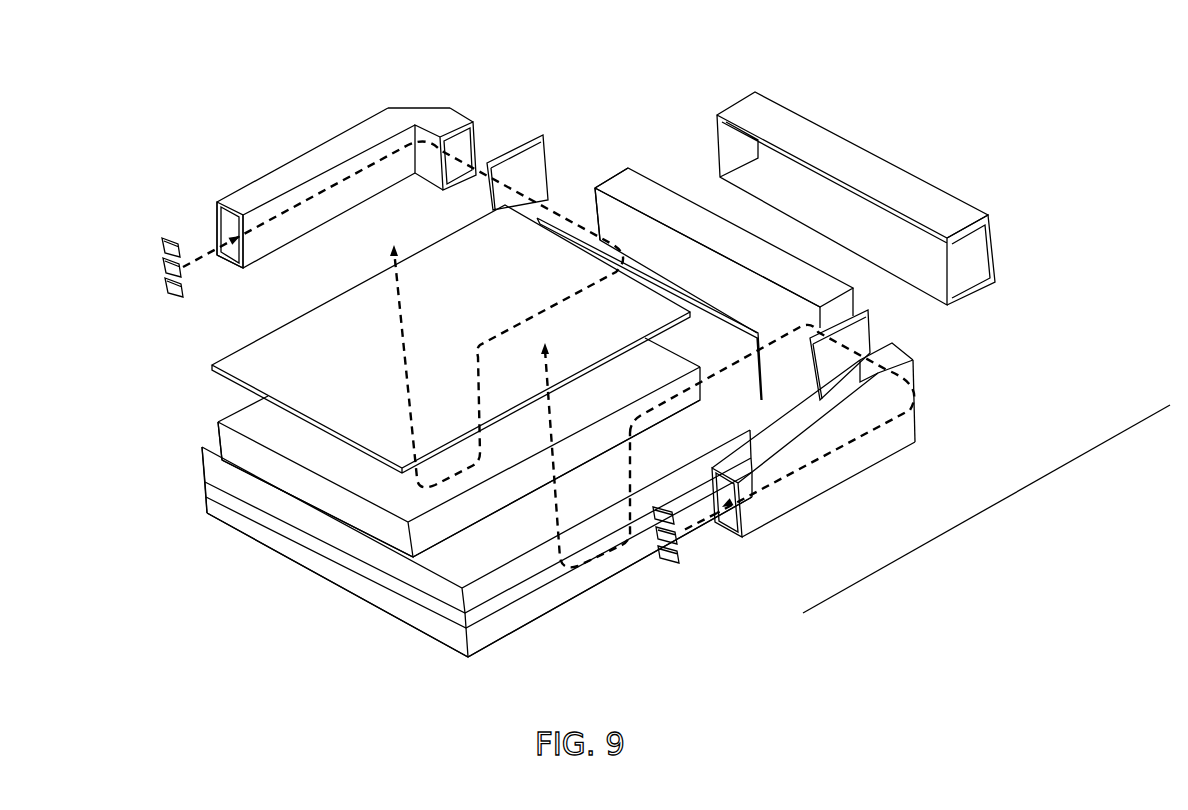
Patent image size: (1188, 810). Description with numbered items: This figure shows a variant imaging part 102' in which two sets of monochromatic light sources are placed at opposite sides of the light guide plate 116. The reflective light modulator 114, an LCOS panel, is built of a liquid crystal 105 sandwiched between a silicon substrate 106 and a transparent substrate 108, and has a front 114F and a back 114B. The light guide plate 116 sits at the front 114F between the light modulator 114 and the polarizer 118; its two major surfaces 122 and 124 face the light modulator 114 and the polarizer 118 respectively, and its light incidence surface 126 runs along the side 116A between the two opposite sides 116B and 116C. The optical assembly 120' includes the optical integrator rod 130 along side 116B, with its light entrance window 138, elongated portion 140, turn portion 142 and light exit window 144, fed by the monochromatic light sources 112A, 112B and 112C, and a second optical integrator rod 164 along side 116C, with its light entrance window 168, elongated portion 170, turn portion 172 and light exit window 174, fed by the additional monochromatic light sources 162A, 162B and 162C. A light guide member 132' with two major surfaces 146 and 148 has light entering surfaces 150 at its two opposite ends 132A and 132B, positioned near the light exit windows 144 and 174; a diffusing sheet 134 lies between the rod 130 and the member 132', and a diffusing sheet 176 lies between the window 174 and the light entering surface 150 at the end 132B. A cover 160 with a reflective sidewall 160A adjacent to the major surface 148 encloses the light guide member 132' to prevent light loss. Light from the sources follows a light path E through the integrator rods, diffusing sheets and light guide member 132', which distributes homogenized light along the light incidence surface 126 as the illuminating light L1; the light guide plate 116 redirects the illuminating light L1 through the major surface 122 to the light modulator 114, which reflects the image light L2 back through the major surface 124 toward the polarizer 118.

The imaging part 102' is at (629, 342).
The light modulator 114 is at (421, 534).
The transparent substrate 108 is at (206, 470).
The liquid crystal 105 is at (206, 490).
The silicon substrate 106 is at (206, 508).
The front 114F is at (202, 446).
The back 114B is at (446, 577).
The light guide plate 116 is at (470, 432).
The side 116A is at (687, 350).
The side 116B is at (445, 522).
The side 116C is at (236, 402).
The major surface 122 is at (345, 522).
The major surface 124 is at (397, 493).
The polarizer 118 is at (318, 314).
The light incidence surface 126 is at (704, 390).
The light guide member 132' is at (750, 202).
The major surface 146 is at (607, 217).
The major surface 148 is at (694, 200).
The light entering surface 150 is at (606, 182).
The end 132A is at (858, 297).
The end 132B is at (598, 174).
The diffusing sheet 134 is at (870, 337).
The optical integrator rod 130 is at (849, 442).
The light entrance window 138 is at (742, 520).
The elongated portion 140 is at (843, 482).
The turn portion 142 is at (917, 402).
The light exit window 144 is at (901, 351).
The cover 160 is at (892, 198).
The reflective sidewall 160A is at (975, 242).
The elongated portion 170 is at (356, 147).
The light entrance window 168 is at (226, 196).
The optical integrator rod 164 is at (448, 108).
The turn portion 172 is at (412, 107).
The light exit window 174 is at (466, 113).
The diffusing sheet 176 is at (530, 140).
The monochromatic light source 112A is at (677, 519).
The monochromatic light source 112B is at (681, 541).
The monochromatic light source 112C is at (668, 570).
The monochromatic light source 162A is at (160, 238).
The monochromatic light source 162B is at (163, 266).
The monochromatic light source 162C is at (166, 290).
The illuminating light L1 is at (748, 364).
The image light L2 is at (548, 432).
The light path E is at (717, 523).
The optical assembly 120' is at (986, 509).